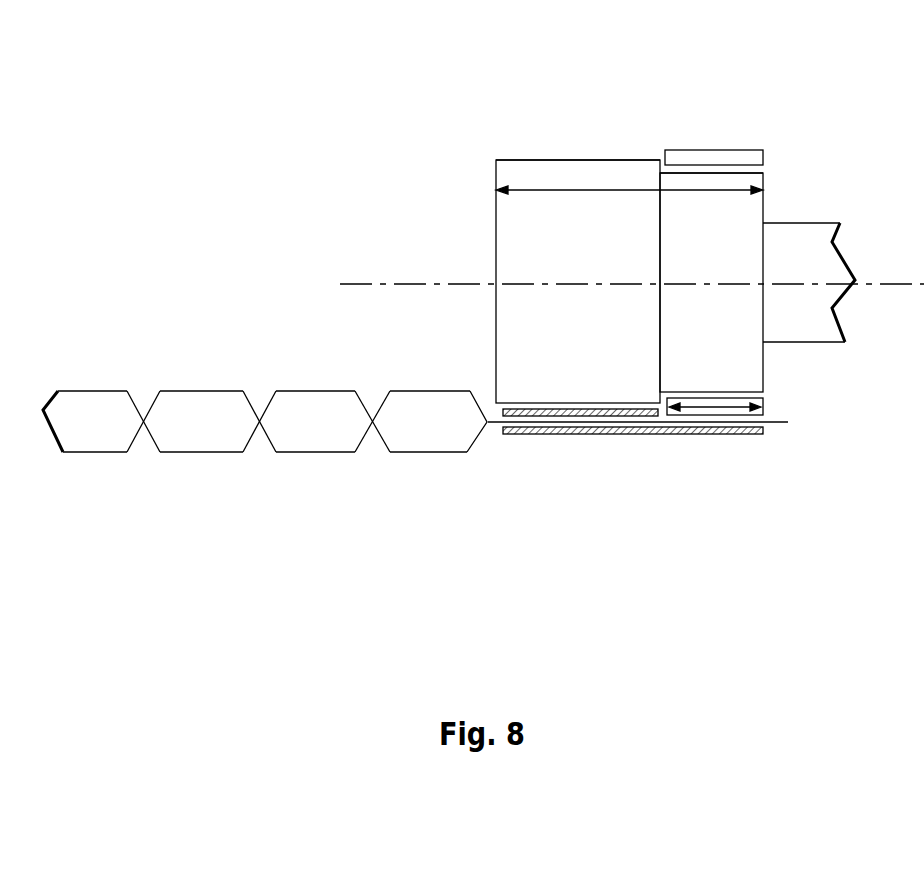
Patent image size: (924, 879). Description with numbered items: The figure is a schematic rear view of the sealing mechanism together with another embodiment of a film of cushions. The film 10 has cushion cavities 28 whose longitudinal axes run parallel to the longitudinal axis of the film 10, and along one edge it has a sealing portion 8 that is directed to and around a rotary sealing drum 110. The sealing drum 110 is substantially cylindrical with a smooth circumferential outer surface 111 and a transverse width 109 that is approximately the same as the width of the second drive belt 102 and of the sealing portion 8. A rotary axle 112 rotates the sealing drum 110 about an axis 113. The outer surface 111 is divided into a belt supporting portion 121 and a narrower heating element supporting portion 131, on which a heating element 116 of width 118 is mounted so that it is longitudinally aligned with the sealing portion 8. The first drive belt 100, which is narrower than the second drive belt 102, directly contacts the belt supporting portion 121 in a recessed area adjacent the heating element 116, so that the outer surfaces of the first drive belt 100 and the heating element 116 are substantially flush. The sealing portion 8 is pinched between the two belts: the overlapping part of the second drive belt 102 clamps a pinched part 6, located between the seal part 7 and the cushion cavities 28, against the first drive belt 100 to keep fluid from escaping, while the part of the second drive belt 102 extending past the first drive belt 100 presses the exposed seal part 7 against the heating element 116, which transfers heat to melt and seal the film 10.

The pinched part 6 is at (557, 423).
The seal part 7 is at (727, 425).
The sealing portion 8 is at (784, 435).
The film 10 is at (295, 467).
The cushion cavities 28 is at (102, 427).
The first drive belt 100 is at (643, 428).
The second drive belt 102 is at (602, 448).
The transverse width 109 is at (585, 193).
The sealing drum 110 is at (511, 210).
The circumferential outer surface 111 is at (553, 155).
The rotary axle 112 is at (803, 248).
The axis 113 is at (912, 284).
The heating element 116 is at (740, 148).
The width 118 is at (695, 407).
The belt supporting portion 121 is at (578, 392).
The heating element supporting portion 131 is at (719, 378).